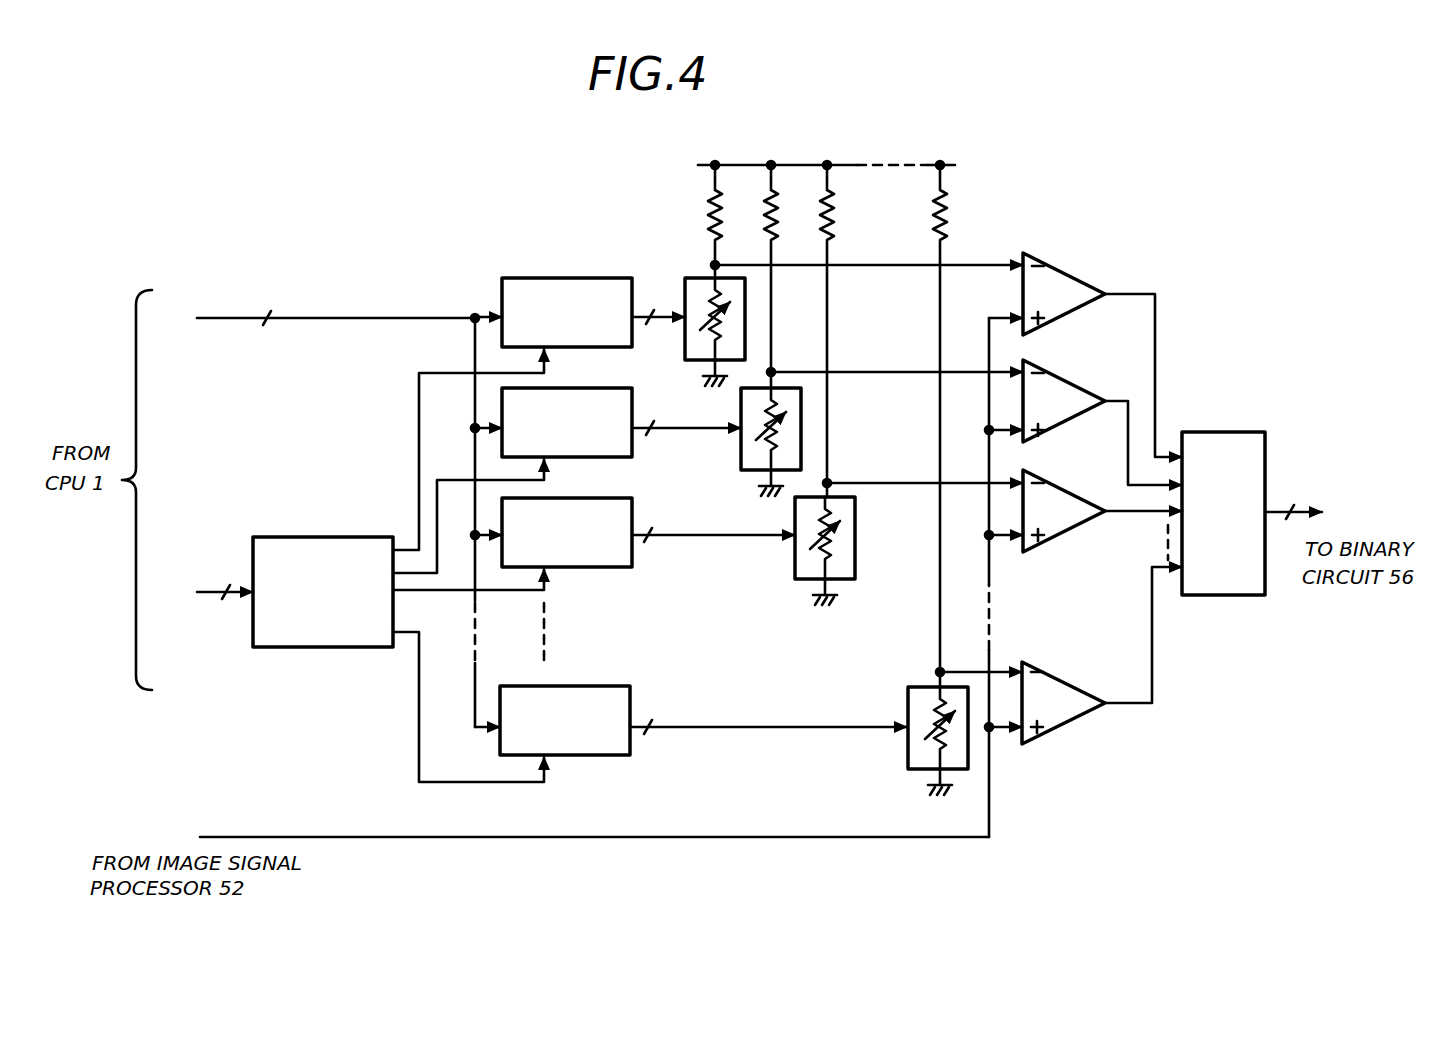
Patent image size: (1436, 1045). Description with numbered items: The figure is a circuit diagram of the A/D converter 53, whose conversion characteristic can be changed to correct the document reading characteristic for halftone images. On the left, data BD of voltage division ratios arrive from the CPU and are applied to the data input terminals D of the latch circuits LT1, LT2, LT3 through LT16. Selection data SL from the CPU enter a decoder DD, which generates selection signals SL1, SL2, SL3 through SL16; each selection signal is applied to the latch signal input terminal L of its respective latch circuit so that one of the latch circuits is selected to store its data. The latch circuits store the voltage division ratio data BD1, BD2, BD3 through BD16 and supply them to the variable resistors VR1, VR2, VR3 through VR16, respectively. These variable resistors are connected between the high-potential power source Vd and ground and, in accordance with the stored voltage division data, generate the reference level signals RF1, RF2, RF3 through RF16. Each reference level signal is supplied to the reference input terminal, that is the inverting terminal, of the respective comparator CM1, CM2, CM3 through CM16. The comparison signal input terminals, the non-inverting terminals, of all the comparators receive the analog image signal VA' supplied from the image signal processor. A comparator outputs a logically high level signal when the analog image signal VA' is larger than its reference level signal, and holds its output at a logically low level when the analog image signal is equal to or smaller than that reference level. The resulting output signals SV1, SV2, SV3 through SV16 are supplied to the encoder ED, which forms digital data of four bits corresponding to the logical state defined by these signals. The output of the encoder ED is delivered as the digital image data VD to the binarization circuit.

The A/D converter 53 is at (1230, 163).
The data of voltage division ratios BD is at (326, 516).
The selection data SL is at (200, 594).
The decoder DD is at (272, 537).
The selection signal SL1 is at (419, 432).
The selection signal SL2 is at (458, 478).
The selection signal SL3 is at (446, 590).
The selection signal SL16 is at (419, 727).
The latch circuit LT1 is at (550, 278).
The latch circuit LT2 is at (577, 388).
The latch circuit LT3 is at (620, 498).
The latch circuit LT16 is at (610, 686).
The voltage division ratio data BD1 is at (657, 317).
The voltage division ratio data BD2 is at (684, 428).
The voltage division ratio data BD3 is at (697, 535).
The voltage division ratio data BD16 is at (723, 727).
The high-potential power source Vd is at (847, 168).
The reference level signal RF1 is at (985, 265).
The reference level signal RF2 is at (970, 372).
The reference level signal RF3 is at (958, 483).
The reference level signal RF16 is at (998, 672).
The variable resistor VR1 is at (708, 278).
The variable resistor VR2 is at (741, 456).
The variable resistor VR3 is at (795, 562).
The variable resistor VR16 is at (908, 702).
The analog image signal VA' is at (589, 584).
The comparator CM1 is at (1068, 272).
The comparator CM2 is at (1060, 382).
The comparator CM3 is at (1065, 492).
The comparator CM16 is at (1078, 690).
The comparator output signal SV1 is at (1140, 294).
The comparator output signal SV2 is at (1118, 401).
The comparator output signal SV3 is at (1105, 512).
The comparator output signal SV16 is at (1118, 705).
The encoder ED is at (1215, 432).
The digital image data VD is at (1316, 514).